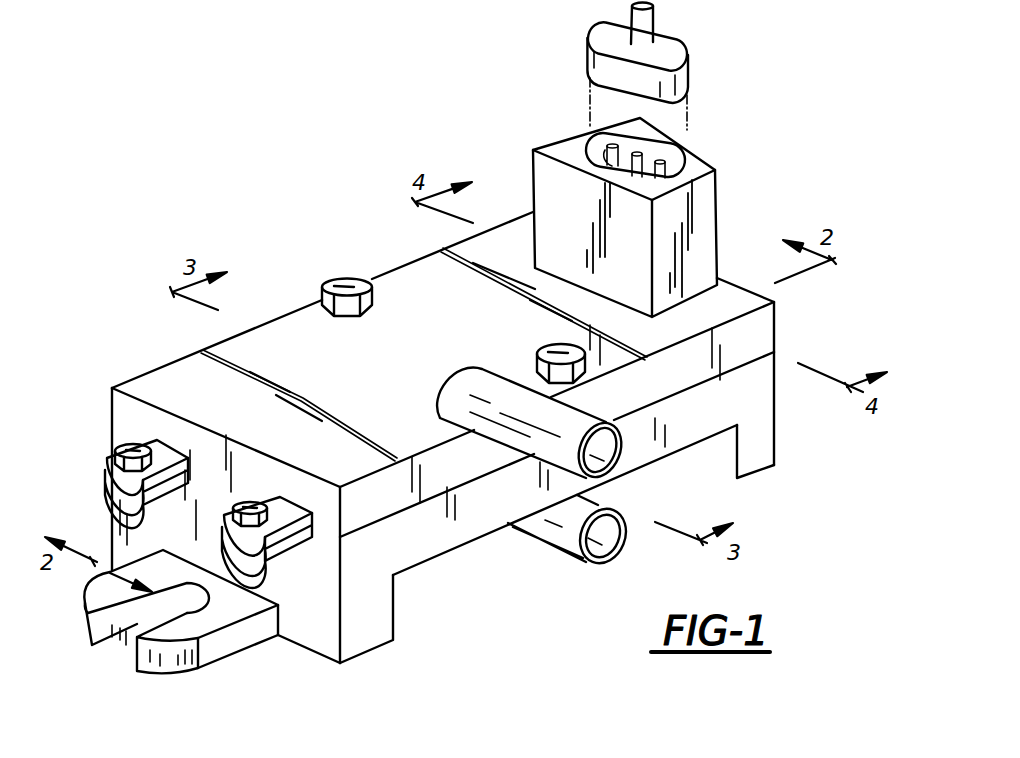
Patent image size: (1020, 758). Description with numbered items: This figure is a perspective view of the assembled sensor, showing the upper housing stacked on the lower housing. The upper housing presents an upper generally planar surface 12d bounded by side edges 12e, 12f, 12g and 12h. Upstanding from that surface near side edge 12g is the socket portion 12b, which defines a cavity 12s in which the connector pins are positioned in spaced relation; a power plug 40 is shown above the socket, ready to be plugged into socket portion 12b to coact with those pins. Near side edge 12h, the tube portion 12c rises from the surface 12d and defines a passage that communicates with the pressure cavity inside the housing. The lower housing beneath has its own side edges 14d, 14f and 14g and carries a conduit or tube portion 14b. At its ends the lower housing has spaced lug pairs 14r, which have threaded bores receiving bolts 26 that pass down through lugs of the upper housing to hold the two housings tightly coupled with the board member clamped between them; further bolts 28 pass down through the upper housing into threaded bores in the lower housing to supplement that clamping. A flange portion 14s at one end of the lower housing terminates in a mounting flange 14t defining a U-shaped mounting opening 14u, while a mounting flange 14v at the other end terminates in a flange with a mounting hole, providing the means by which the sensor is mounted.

The socket portion 12b is at (707, 200).
The tube portion 12c is at (510, 387).
The upper generally planar surface 12d is at (406, 379).
The side edge 12e is at (130, 421).
The side edge 12f is at (114, 386).
The side edge 12g is at (745, 293).
The side edge 12h is at (373, 498).
The cavity 12s is at (668, 155).
The tube portion 14b is at (560, 543).
The side edge 14d is at (123, 523).
The side edge 14f is at (776, 432).
The side edge 14g is at (657, 445).
The lug pairs 14r is at (250, 560).
The flange portion 14s is at (373, 640).
The mounting flange 14t is at (217, 653).
The U-shaped mounting opening 14u is at (110, 633).
The mounting flange 14v is at (753, 463).
The bolts 26 is at (250, 500).
The bolts 28 is at (343, 288).
The power plug 40 is at (692, 74).